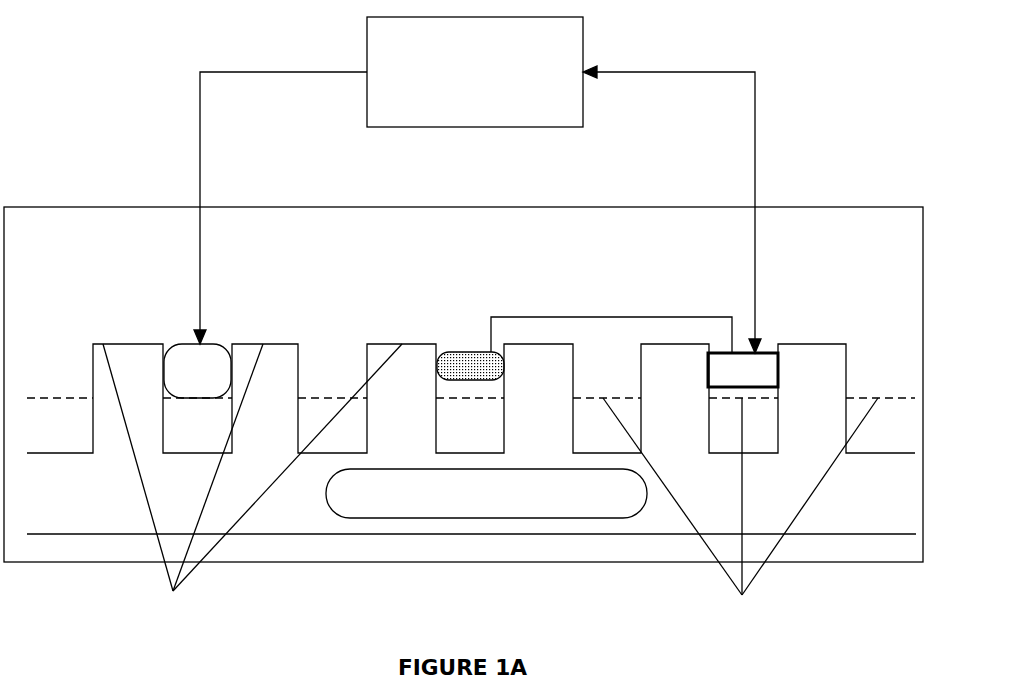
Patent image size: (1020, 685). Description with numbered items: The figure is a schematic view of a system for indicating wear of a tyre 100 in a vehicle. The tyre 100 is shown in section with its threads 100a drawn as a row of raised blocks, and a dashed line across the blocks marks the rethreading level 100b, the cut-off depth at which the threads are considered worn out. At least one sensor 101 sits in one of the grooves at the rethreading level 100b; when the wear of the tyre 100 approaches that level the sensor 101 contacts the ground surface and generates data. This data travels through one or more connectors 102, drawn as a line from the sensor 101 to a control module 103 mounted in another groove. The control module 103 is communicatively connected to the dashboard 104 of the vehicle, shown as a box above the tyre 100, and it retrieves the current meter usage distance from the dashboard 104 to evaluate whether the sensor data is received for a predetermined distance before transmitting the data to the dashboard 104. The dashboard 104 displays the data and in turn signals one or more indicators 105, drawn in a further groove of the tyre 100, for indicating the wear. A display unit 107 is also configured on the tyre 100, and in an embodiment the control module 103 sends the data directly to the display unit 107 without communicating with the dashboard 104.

The tyre 100 is at (117, 207).
The threads 100a is at (204, 617).
The rethreading level 100b is at (768, 618).
The sensor 101 is at (458, 351).
The connectors 102 is at (597, 317).
The control module 103 is at (764, 353).
The dashboard 104 is at (542, 82).
The indicators 105 is at (216, 343).
The display unit 107 is at (563, 504).